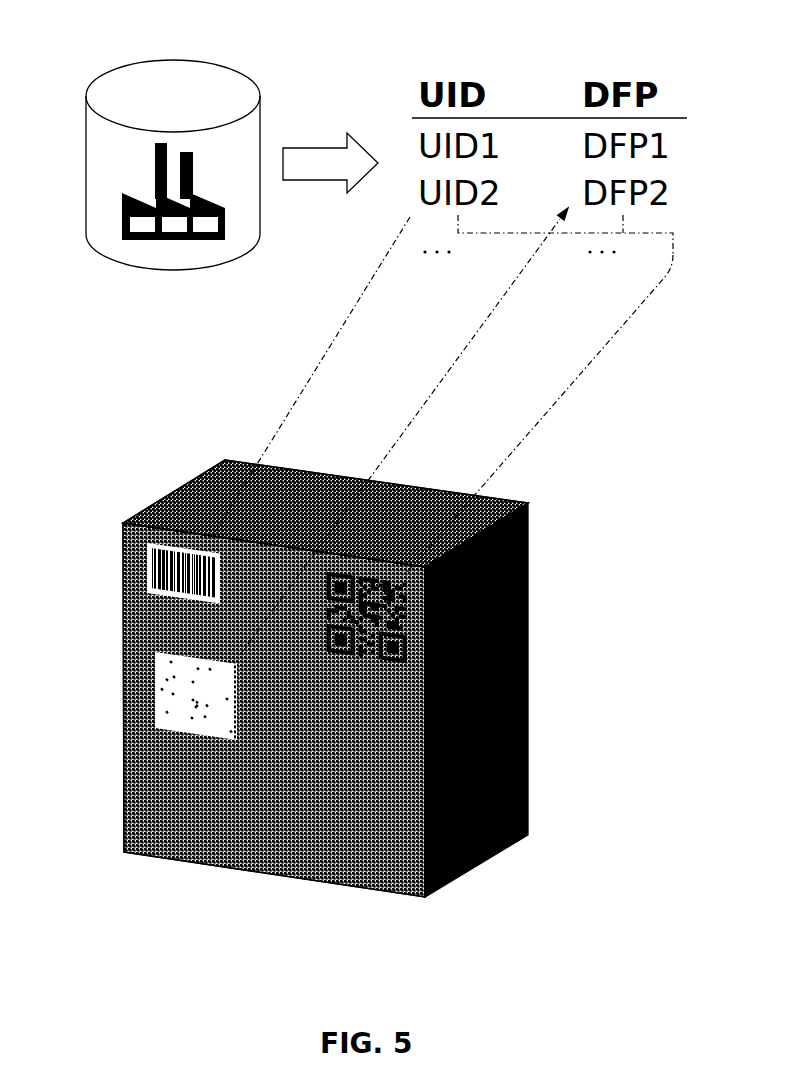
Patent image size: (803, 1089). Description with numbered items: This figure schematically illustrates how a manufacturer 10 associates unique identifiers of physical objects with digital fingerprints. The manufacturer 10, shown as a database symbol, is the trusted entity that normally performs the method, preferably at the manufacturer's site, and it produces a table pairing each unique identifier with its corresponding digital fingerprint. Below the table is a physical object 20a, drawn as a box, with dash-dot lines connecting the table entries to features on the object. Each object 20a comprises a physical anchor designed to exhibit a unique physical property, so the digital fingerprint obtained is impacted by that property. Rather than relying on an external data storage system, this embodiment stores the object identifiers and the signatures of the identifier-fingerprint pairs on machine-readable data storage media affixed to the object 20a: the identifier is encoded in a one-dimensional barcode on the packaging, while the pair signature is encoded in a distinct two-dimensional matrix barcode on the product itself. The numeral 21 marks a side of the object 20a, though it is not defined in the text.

The manufacturer 10 is at (217, 64).
The object 20a is at (384, 678).
The surface of the package 21 is at (528, 642).